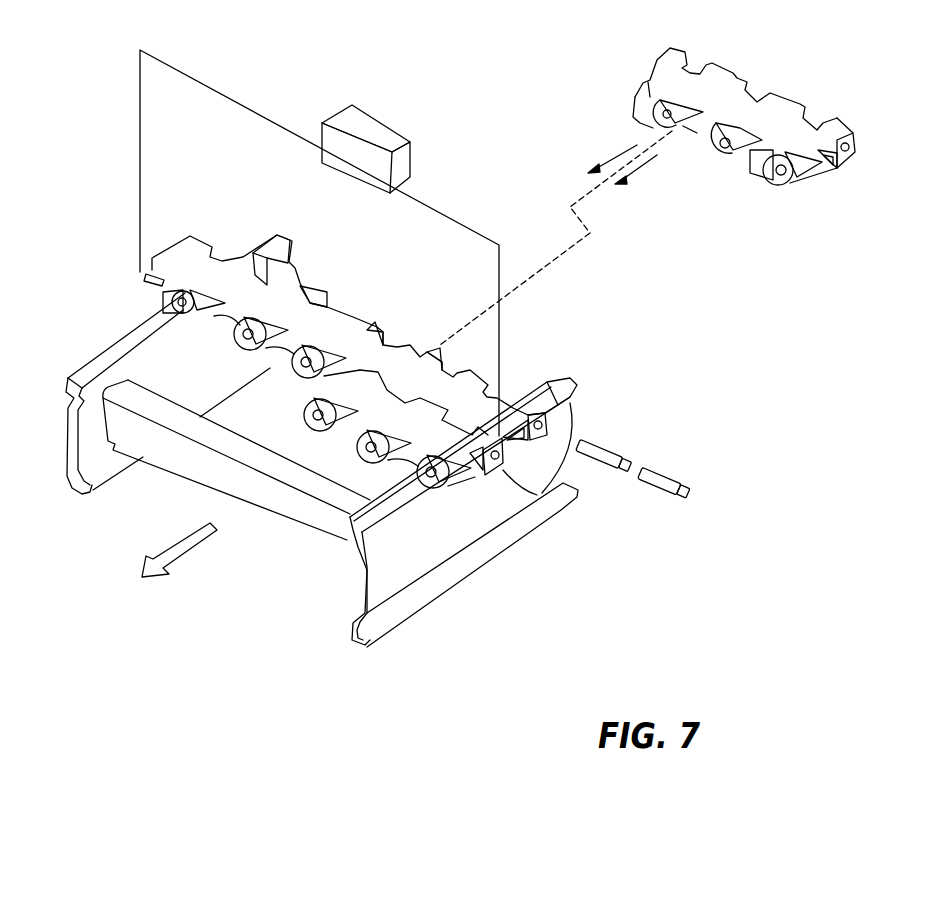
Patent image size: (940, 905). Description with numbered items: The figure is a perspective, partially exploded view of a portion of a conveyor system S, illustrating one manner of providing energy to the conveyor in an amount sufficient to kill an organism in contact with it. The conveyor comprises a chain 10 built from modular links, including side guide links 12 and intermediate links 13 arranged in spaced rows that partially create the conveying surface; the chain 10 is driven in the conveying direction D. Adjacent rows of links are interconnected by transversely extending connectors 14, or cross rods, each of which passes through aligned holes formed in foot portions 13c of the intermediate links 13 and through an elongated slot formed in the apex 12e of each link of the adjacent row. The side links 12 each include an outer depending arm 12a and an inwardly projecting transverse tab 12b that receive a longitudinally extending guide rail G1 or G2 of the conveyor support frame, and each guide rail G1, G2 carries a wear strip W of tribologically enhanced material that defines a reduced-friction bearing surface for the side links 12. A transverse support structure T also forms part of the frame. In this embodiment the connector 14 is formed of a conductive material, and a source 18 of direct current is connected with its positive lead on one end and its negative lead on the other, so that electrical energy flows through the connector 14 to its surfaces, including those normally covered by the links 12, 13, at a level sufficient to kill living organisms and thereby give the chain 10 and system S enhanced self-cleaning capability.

The chain 10 is at (365, 435).
The side guide link 12 is at (677, 294).
The outer depending arm 12a is at (856, 152).
The transverse tab 12b is at (832, 165).
The apex 12e is at (793, 185).
The intermediate link 13 is at (361, 333).
The foot portion 13c is at (297, 300).
The connector 14 is at (142, 276).
The source 18 is at (367, 128).
The conveyor system S is at (521, 108).
The guide rail G1 is at (203, 380).
The guide rail G2 is at (490, 523).
The transverse support structure T is at (275, 500).
The wear strip W is at (348, 517).
The conveying direction D is at (178, 540).